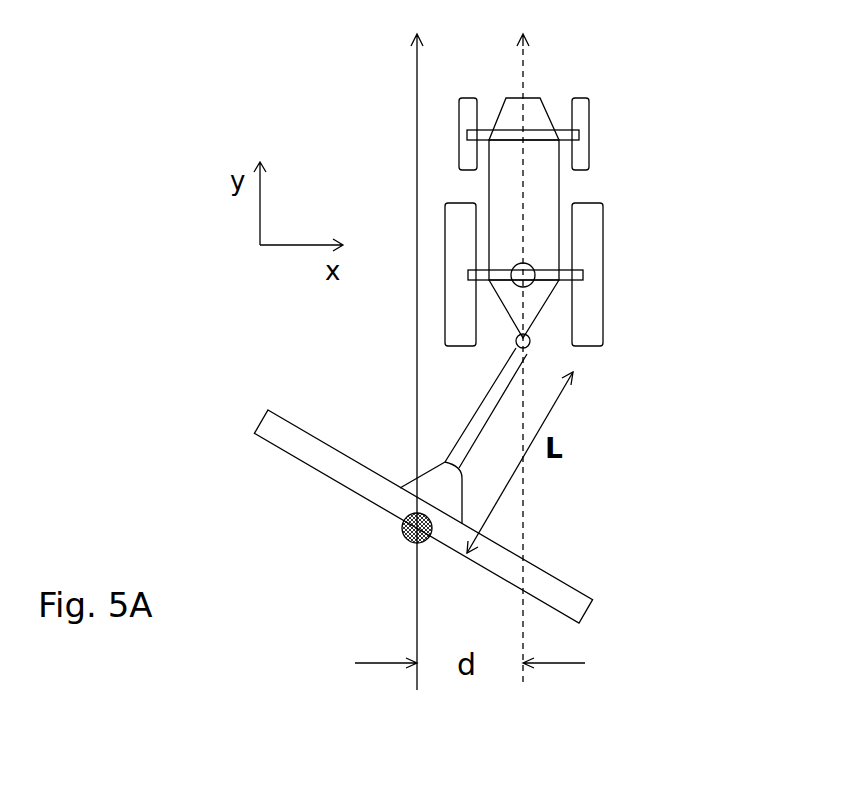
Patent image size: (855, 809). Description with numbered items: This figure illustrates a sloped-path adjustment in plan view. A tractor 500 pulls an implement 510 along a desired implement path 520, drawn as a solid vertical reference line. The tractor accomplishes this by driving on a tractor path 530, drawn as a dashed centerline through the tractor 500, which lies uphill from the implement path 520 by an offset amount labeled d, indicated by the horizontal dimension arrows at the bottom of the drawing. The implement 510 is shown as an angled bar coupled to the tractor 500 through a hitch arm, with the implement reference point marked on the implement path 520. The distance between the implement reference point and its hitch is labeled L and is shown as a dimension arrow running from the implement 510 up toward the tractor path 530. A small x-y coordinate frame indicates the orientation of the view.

The tractor 500 is at (547, 195).
The implement 510 is at (282, 430).
The desired implement path 520 is at (415, 587).
The tractor path 530 is at (530, 67).